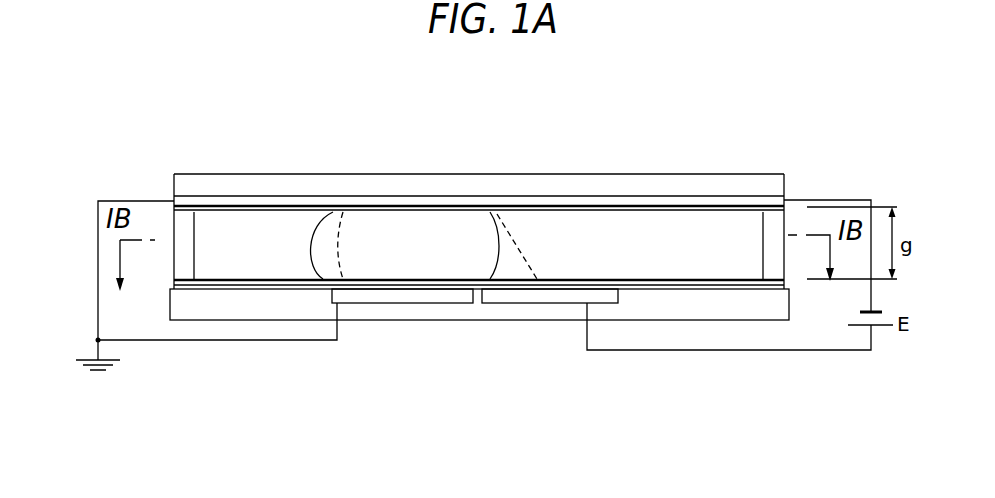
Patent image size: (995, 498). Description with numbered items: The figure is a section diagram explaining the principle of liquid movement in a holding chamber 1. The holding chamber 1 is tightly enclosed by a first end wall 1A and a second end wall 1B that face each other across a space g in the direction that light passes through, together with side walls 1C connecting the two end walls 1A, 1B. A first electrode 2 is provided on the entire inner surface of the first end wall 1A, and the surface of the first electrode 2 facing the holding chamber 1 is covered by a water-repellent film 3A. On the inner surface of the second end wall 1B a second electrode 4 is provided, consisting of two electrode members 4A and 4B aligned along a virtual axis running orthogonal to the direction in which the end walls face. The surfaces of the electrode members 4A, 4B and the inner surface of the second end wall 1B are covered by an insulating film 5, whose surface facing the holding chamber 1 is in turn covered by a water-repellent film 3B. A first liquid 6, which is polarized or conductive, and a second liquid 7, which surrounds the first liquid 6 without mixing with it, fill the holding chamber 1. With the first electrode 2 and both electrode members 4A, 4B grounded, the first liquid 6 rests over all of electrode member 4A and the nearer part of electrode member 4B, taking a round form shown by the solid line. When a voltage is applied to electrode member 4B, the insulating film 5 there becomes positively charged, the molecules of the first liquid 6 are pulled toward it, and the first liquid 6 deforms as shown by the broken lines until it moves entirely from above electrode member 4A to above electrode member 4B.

The holding chamber 1 is at (789, 145).
The first end wall 1A is at (430, 174).
The second end wall 1B is at (363, 320).
The side walls 1C is at (172, 267).
The first electrode 2 is at (575, 202).
The water-repellent film 3A is at (633, 216).
The water-repellent film 3B is at (667, 274).
The second electrode 4 is at (484, 341).
The electrode member 4A is at (425, 295).
The electrode member 4B is at (507, 295).
The insulating film 5 is at (640, 287).
The first liquid 6 is at (332, 247).
The second liquid 7 is at (247, 234).